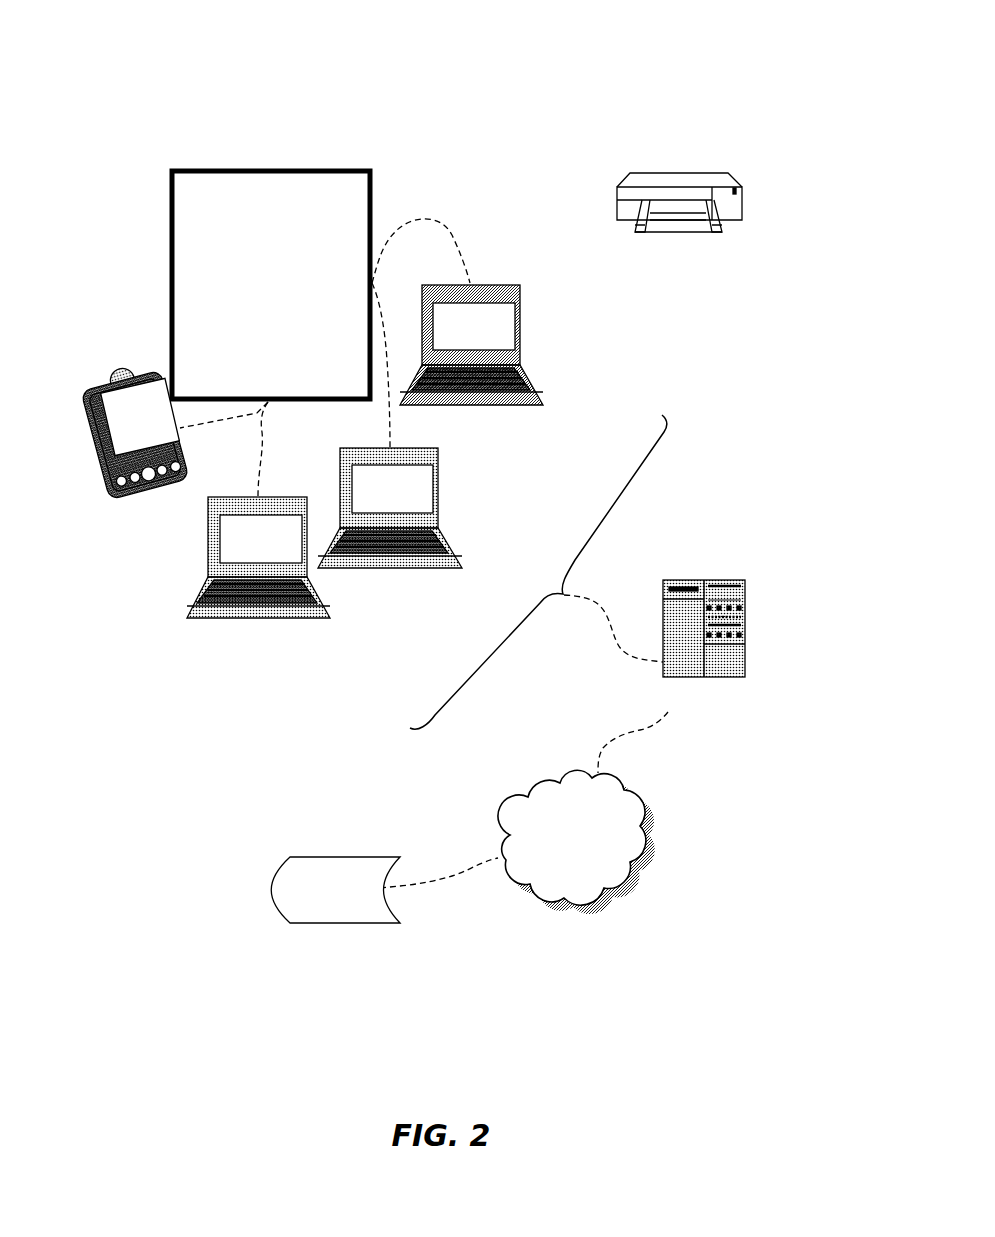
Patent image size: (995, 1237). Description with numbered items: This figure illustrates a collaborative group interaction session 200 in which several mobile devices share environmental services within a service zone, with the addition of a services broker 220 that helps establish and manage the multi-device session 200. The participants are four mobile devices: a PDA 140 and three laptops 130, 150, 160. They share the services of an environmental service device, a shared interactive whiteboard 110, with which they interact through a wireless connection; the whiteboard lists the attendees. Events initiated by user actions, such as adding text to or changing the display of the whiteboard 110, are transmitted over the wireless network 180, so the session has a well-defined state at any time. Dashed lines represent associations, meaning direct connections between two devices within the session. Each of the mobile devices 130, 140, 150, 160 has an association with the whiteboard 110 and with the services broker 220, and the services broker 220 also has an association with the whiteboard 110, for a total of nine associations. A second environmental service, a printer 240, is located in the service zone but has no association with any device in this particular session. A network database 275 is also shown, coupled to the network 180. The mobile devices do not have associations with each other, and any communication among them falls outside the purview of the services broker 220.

The group interaction session 200 is at (80, 33).
The whiteboard 110 is at (258, 170).
The laptop 130 is at (268, 618).
The PDA 140 is at (170, 480).
The laptop 150 is at (529, 368).
The laptop 160 is at (455, 552).
The wireless network 180 is at (548, 893).
The services broker 220 is at (711, 578).
The printer 240 is at (727, 172).
The network database 275 is at (352, 857).